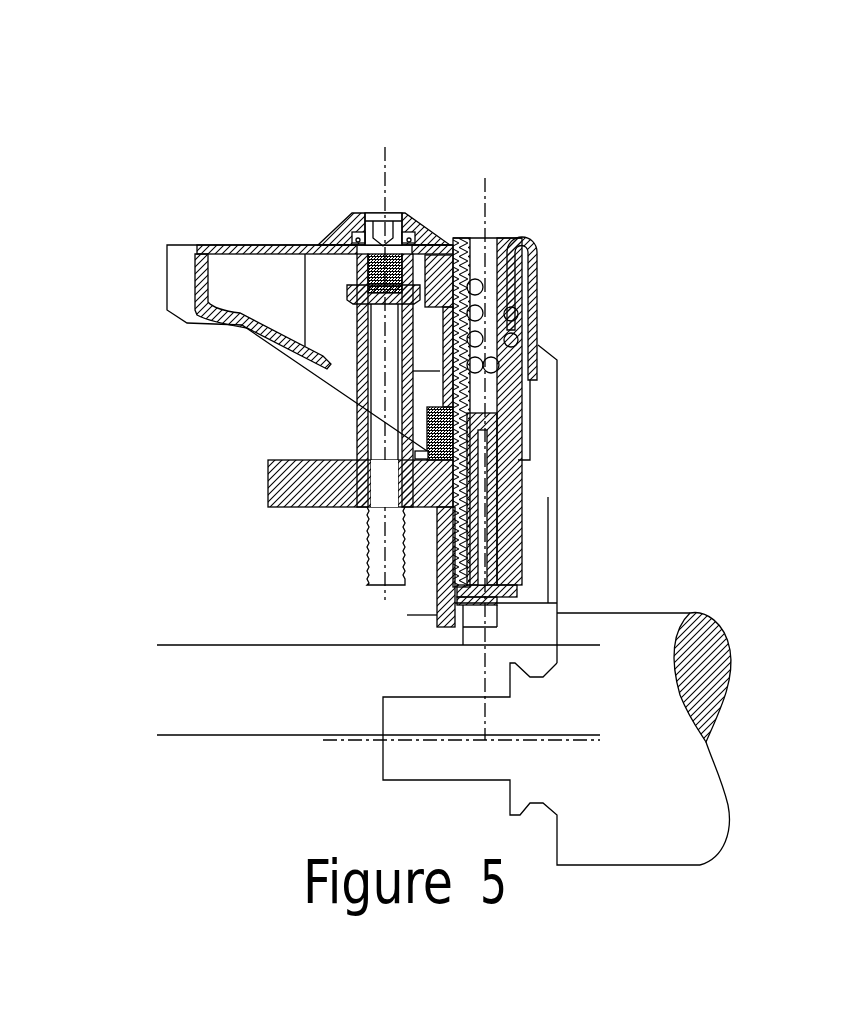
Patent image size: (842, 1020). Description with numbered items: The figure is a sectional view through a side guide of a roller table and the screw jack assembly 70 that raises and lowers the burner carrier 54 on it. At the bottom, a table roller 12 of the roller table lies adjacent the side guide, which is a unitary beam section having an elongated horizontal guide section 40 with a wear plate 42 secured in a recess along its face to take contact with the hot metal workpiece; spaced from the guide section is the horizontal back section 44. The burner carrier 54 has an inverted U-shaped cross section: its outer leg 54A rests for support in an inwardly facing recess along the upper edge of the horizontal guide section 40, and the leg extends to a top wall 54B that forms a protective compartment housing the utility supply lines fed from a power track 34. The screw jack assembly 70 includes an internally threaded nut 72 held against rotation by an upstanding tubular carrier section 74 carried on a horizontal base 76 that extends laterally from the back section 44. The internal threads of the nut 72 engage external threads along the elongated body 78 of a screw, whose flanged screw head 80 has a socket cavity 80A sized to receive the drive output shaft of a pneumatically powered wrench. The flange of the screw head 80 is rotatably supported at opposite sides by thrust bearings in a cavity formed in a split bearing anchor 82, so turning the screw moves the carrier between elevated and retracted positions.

The table roller 12 is at (717, 762).
The power track 34 is at (180, 243).
The horizontal guide section 40 is at (557, 451).
The wear plate 42 is at (557, 551).
The horizontal back section 44 is at (425, 614).
The burner carrier 54 is at (499, 624).
The outer leg 54A is at (543, 320).
The top wall 54B is at (520, 240).
The screw jack assembly 70 is at (402, 209).
The internally threaded nut 72 is at (357, 270).
The upstanding tubular carrier section 74 is at (357, 412).
The horizontal base 76 is at (268, 478).
The elongated body 78 is at (377, 352).
The flanged screw head 80 is at (420, 213).
The socket cavity 80A is at (382, 212).
The split bearing anchor 82 is at (342, 220).